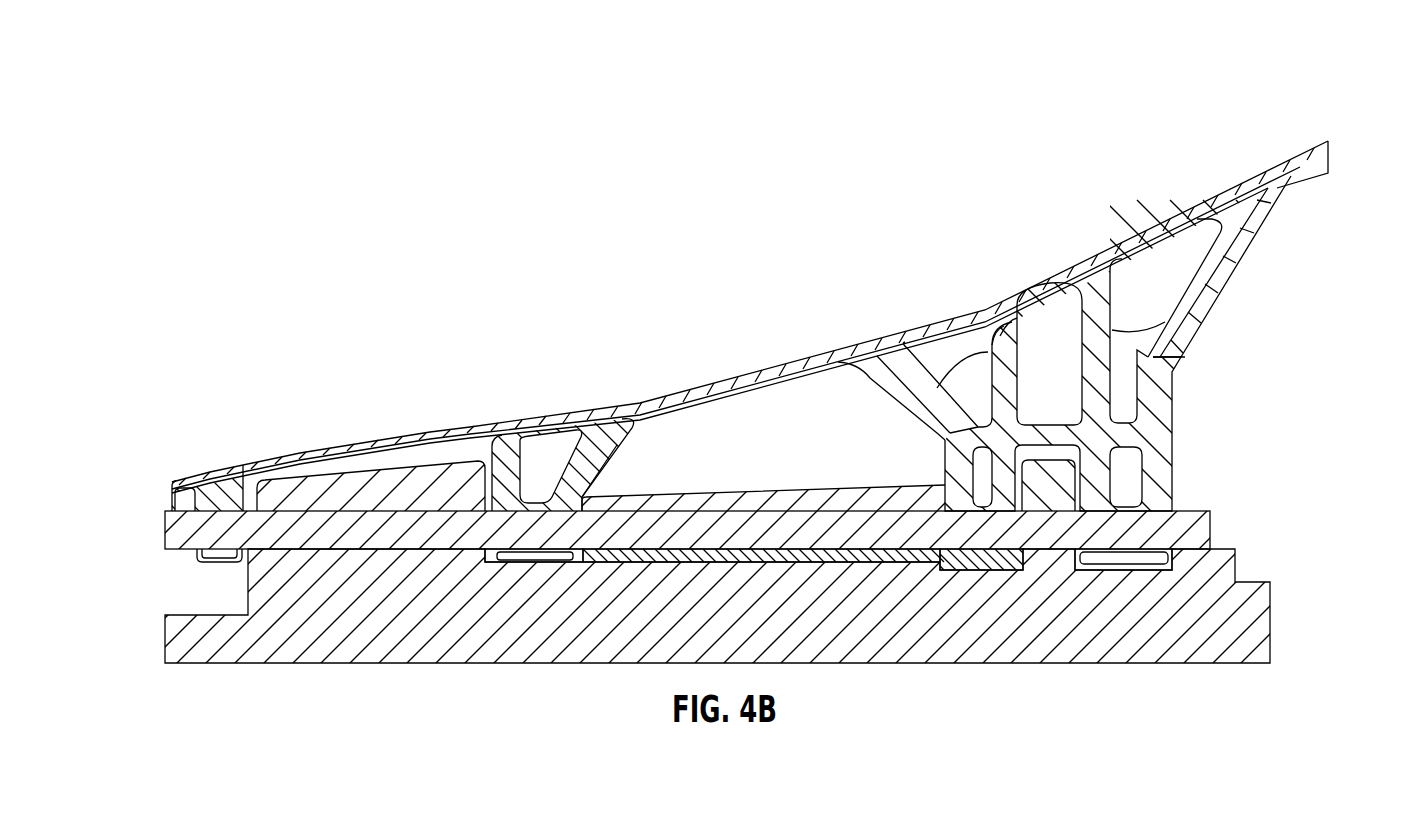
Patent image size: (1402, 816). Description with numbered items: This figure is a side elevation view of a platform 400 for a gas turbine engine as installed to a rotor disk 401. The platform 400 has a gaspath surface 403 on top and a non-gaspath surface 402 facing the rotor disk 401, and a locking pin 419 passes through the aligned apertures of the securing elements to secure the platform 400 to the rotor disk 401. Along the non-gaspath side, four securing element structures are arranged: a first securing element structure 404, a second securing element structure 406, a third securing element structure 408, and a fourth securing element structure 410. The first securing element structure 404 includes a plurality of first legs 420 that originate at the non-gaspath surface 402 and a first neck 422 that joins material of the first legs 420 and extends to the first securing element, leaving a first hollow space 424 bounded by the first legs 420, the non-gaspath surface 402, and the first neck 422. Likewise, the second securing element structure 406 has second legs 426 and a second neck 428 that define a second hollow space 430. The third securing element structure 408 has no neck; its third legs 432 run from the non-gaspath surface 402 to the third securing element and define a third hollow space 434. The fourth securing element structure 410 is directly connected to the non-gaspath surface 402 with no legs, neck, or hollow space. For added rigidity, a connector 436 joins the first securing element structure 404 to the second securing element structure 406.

The platform 400 is at (1300, 97).
The rotor disk 401 is at (1255, 630).
The non-gaspath surface 402 is at (757, 388).
The gaspath surface 403 is at (740, 376).
The first securing element structure 404 is at (1302, 277).
The second securing element structure 406 is at (876, 350).
The third securing element structure 408 is at (158, 464).
The fourth securing element structure 410 is at (215, 490).
The locking pin 419 is at (182, 538).
The first legs 420 is at (1160, 330).
The first neck 422 is at (1160, 468).
The first hollow space 424 is at (1158, 262).
The second legs 426 is at (953, 433).
The second neck 428 is at (960, 483).
The second hollow space 430 is at (960, 341).
The third legs 432 is at (427, 460).
The third hollow space 434 is at (543, 440).
The connector 436 is at (1070, 425).